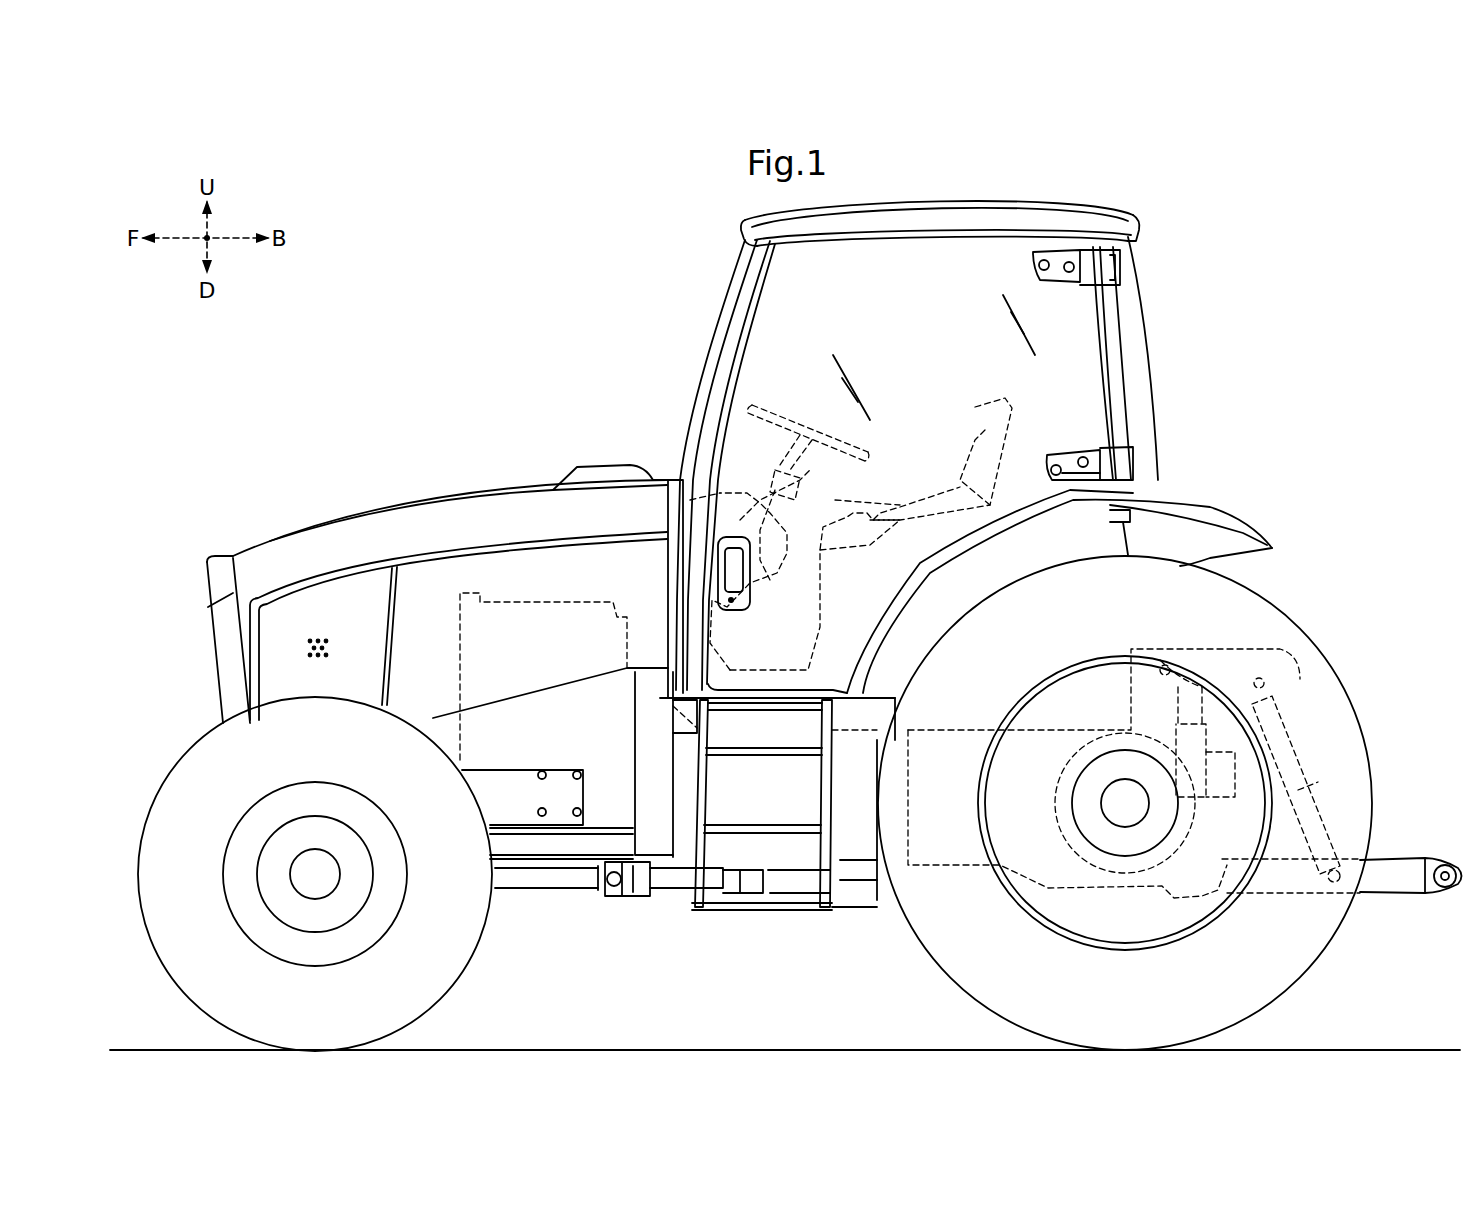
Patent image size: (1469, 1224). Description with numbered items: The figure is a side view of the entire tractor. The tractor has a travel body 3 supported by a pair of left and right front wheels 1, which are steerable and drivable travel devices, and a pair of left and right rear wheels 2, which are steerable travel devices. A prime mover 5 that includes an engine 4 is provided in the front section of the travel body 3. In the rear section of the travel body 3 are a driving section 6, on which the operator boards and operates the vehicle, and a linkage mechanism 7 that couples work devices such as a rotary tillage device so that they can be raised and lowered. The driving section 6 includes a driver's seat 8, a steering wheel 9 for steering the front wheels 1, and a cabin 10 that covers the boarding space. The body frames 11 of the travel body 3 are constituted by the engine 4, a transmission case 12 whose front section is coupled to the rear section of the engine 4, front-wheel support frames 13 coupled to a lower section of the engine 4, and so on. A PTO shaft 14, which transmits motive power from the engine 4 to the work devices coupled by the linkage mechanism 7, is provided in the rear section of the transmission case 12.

The front wheels 1 is at (468, 965).
The rear wheels 2 is at (943, 971).
The travel body 3 is at (832, 940).
The engine 4 is at (600, 818).
The prime mover 5 is at (455, 489).
The driving section 6 is at (974, 434).
The linkage mechanism 7 is at (1399, 902).
The driver's seat 8 is at (978, 440).
The steering wheel 9 is at (800, 440).
The cabin 10 is at (1118, 214).
The body frames 11 is at (793, 873).
The transmission case 12 is at (855, 847).
The front-wheel support frames 13 is at (512, 778).
The PTO shaft 14 is at (1257, 826).